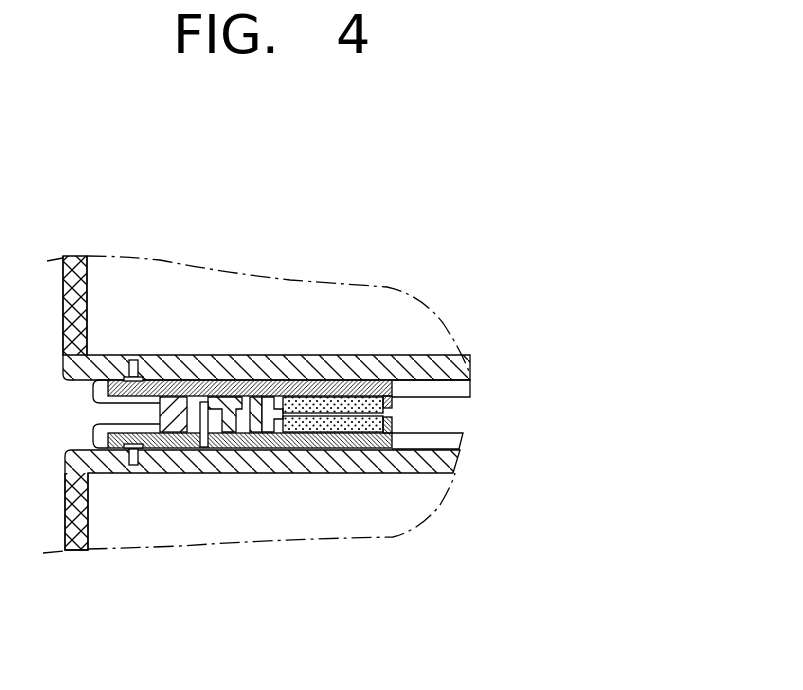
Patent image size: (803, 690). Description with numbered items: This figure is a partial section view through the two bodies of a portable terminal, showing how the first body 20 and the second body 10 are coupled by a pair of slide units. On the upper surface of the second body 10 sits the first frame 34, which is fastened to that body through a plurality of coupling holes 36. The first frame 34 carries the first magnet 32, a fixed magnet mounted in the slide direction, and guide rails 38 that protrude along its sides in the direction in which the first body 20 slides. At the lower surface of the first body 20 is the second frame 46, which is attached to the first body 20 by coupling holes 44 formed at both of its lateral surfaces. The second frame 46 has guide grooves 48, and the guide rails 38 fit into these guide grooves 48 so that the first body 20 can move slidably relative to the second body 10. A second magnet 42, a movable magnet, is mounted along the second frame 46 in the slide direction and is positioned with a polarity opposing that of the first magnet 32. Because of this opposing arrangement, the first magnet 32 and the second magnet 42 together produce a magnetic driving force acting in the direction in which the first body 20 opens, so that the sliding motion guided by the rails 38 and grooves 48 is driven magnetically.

The second body 10 is at (252, 517).
The first body 20 is at (274, 305).
The first magnet 32 is at (312, 424).
The first frame 34 is at (355, 398).
The coupling holes 36 is at (101, 447).
The guide rails 38 is at (204, 448).
The second magnet 42 is at (312, 392).
The coupling holes 44 is at (90, 355).
The second frame 46 is at (355, 382).
The guide grooves 48 is at (216, 397).